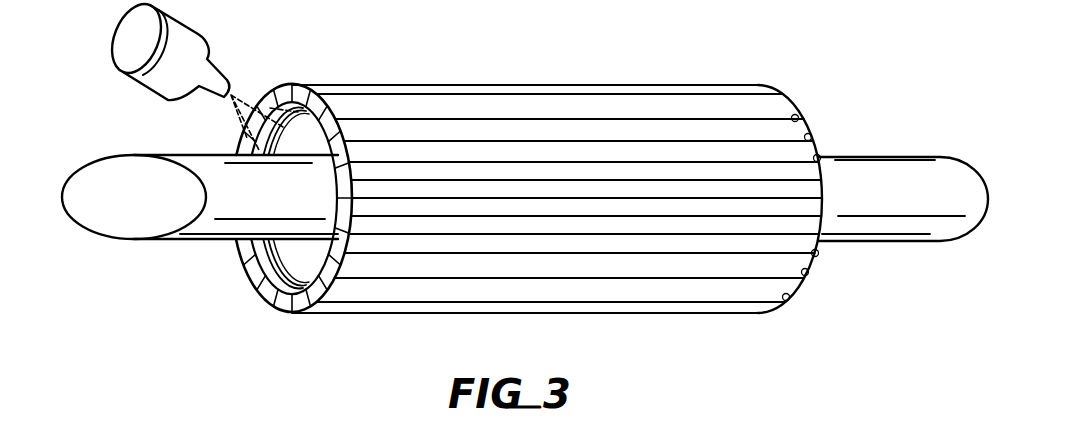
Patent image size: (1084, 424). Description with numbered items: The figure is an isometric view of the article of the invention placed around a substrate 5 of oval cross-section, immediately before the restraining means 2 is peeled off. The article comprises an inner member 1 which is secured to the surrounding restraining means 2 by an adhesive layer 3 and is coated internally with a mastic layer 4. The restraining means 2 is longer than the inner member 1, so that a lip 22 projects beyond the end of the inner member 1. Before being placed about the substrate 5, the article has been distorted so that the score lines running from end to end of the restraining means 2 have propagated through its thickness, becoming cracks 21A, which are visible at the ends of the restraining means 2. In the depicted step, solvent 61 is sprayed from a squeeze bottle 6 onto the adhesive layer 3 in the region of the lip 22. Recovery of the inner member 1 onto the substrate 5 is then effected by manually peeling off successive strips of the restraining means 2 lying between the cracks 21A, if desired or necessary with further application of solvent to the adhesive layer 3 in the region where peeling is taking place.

The inner member 1 is at (280, 247).
The restraining means 2 is at (519, 108).
The adhesive layer 3 is at (278, 262).
The mastic layer 4 is at (284, 283).
The substrate 5 is at (917, 168).
The squeeze bottle 6 is at (180, 42).
The solvent 61 is at (251, 100).
The lip 22 is at (245, 147).
The cracks 21A is at (818, 158).